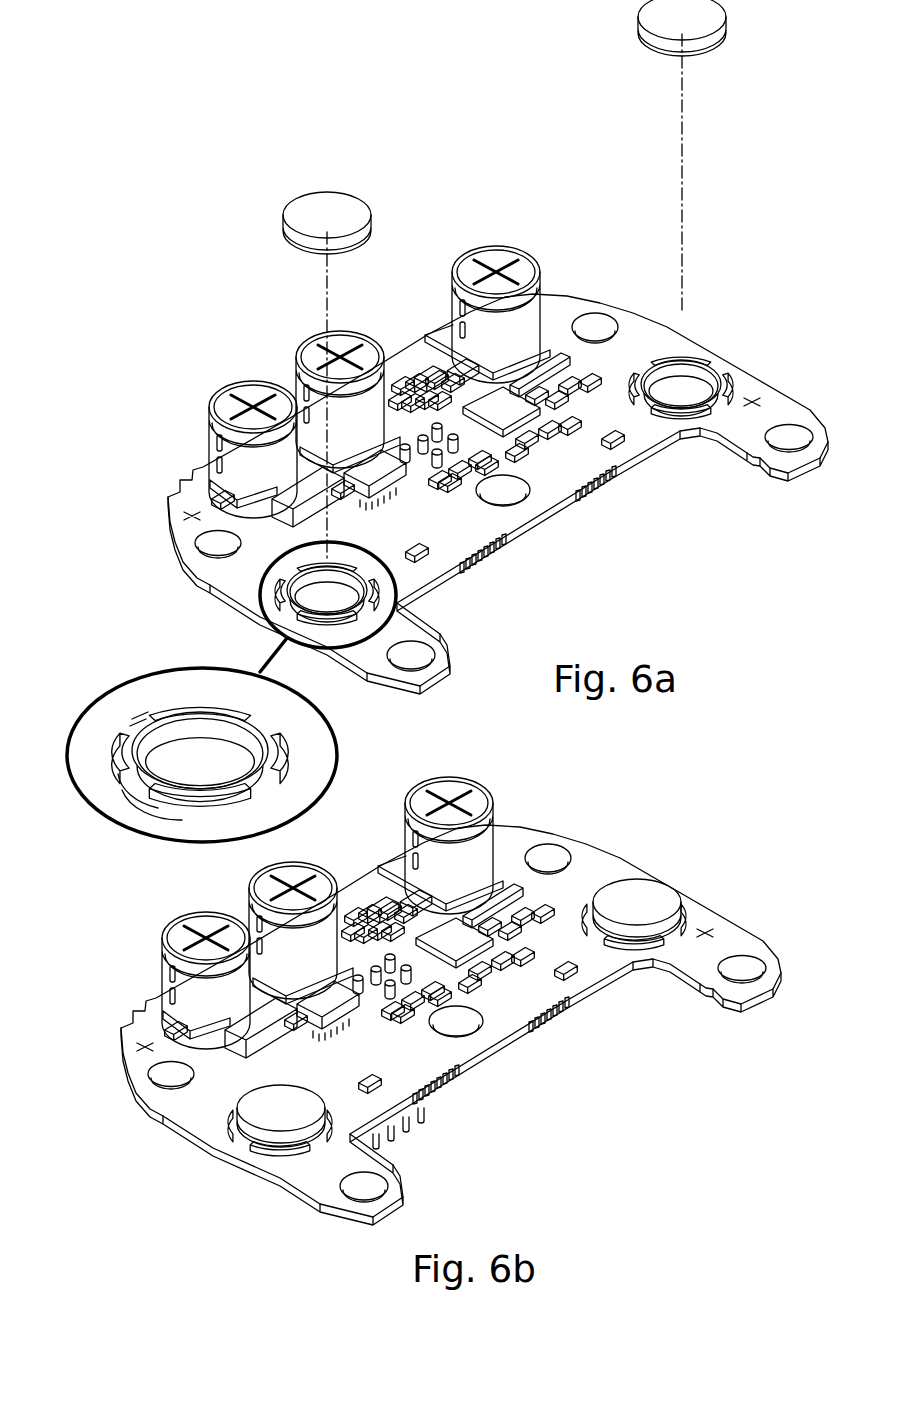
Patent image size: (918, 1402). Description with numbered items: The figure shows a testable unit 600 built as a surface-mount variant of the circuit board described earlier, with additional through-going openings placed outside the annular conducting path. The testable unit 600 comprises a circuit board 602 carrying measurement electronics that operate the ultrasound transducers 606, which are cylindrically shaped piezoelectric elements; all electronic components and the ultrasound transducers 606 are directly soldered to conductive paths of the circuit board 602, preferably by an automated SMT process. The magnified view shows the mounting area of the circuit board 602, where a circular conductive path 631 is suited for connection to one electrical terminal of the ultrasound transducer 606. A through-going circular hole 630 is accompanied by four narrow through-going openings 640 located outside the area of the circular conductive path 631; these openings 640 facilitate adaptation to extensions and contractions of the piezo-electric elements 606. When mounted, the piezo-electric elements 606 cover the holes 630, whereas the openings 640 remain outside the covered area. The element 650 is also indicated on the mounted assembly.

In FIG. 6B, the testable unit 600 is at (442, 1001).
In FIG. 6A, the circuit board 602 is at (247, 572).
In FIG. 6B, the circuit board 602 is at (211, 1098).
In FIG. 6A, the ultrasound transducer 606 is at (328, 220).
In FIG. 6B, the ultrasound transducer 606 is at (632, 908).
In FIG. 6A, the hole 630 is at (677, 383).
In FIG. 6A, the circular conductive path 631 is at (140, 728).
In FIG. 6A, the narrow through-going openings 640 is at (115, 760).
In FIG. 6B, the connector pins 650 is at (408, 1133).